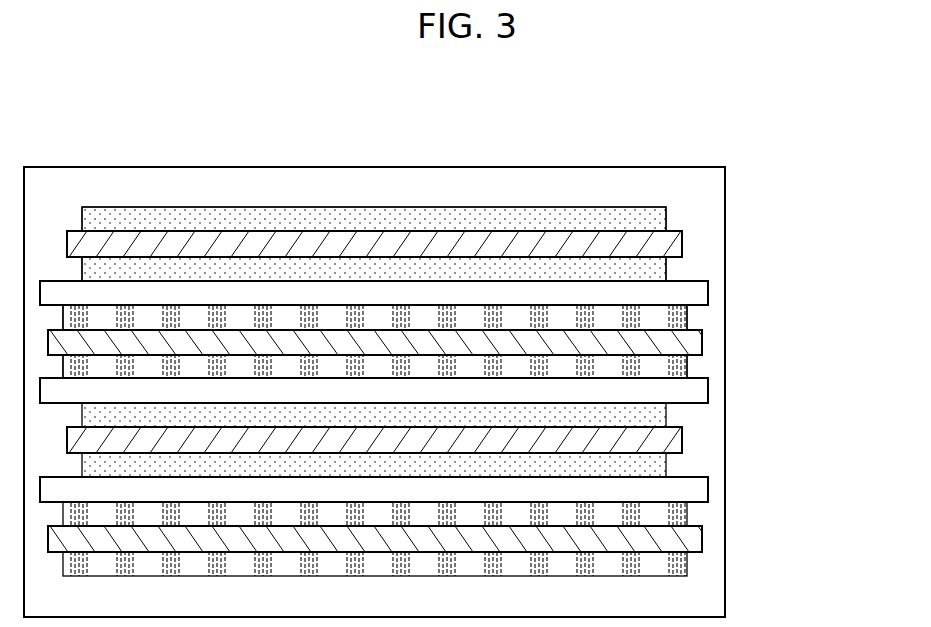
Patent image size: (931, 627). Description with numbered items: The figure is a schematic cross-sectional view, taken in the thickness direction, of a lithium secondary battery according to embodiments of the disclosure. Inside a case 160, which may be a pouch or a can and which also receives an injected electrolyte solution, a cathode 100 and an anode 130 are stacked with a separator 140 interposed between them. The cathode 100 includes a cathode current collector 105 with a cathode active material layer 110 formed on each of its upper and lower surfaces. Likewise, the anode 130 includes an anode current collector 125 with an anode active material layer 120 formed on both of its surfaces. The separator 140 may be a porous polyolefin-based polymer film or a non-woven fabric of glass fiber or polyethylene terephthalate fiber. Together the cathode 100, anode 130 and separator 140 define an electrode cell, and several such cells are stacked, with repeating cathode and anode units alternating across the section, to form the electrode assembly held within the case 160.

The cathode 100 is at (815, 210).
The cathode current collector 105 is at (674, 247).
The cathode active material layer 110 is at (660, 221).
The anode active material layer 120 is at (680, 320).
The anode current collector 125 is at (694, 345).
The anode 130 is at (815, 310).
The separator 140 is at (578, 290).
The case 160 is at (725, 541).